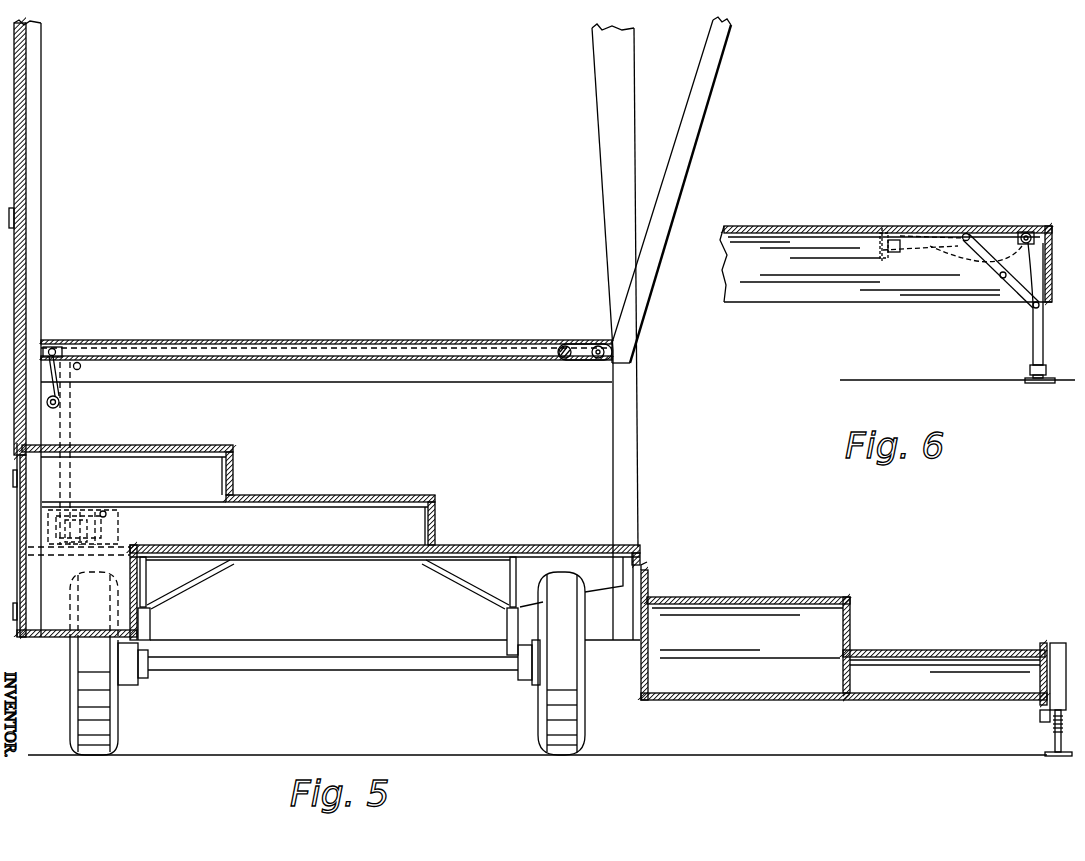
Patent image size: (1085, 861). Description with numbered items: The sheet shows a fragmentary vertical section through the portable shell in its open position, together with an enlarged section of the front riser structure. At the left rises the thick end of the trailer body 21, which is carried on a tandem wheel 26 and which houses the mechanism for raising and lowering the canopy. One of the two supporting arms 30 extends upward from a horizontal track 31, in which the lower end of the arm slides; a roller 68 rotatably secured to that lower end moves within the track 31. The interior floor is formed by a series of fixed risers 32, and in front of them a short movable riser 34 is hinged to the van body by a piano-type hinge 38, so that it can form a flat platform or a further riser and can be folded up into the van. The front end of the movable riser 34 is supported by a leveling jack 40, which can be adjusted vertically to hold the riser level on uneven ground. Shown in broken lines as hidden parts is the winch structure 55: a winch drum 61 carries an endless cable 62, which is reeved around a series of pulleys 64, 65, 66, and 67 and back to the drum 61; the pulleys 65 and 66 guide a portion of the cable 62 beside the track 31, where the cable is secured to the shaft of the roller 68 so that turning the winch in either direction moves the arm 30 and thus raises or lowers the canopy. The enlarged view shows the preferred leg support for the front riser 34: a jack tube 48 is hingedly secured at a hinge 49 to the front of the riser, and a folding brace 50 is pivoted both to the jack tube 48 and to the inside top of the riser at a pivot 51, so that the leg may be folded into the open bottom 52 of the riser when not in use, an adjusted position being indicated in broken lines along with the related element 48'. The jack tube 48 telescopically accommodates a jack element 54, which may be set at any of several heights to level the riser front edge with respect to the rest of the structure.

In FIG. 5, the trailer body 21 is at (40, 92).
In FIG. 5, the tandem wheel 26 is at (105, 728).
In FIG. 5, the supporting arm 30 is at (709, 76).
In FIG. 5, the track 31 is at (450, 345).
In FIG. 5, the fixed riser 32 is at (211, 444).
In FIG. 5, the movable riser 34 is at (848, 597).
In FIG. 6, the movable riser 34 is at (841, 226).
In FIG. 5, the piano-type hinge 38 is at (648, 570).
In FIG. 5, the leveling jack 40 is at (1058, 643).
In FIG. 6, the jack tube 48 is at (1019, 304).
In FIG. 6, the actuator 48' is at (921, 255).
In FIG. 6, the hinge 49 is at (1032, 230).
In FIG. 6, the folding brace 50 is at (1013, 292).
In FIG. 6, the pivot 51 is at (970, 233).
In FIG. 6, the open bottom 52 is at (932, 298).
In FIG. 6, the jack element 54 is at (1028, 375).
In FIG. 5, the winch structure 55 is at (75, 510).
In FIG. 5, the winch drum 61 is at (73, 542).
In FIG. 5, the endless cable 62 is at (73, 432).
In FIG. 5, the pulley 64 is at (62, 405).
In FIG. 5, the pulley 65 is at (56, 348).
In FIG. 5, the pulley 66 is at (597, 358).
In FIG. 5, the pulley 67 is at (85, 368).
In FIG. 5, the roller 68 is at (565, 358).